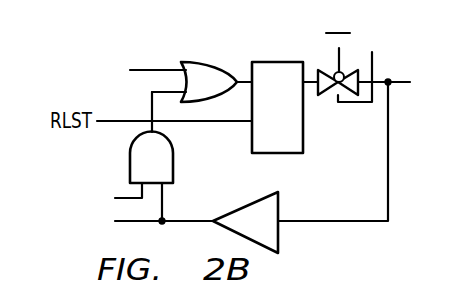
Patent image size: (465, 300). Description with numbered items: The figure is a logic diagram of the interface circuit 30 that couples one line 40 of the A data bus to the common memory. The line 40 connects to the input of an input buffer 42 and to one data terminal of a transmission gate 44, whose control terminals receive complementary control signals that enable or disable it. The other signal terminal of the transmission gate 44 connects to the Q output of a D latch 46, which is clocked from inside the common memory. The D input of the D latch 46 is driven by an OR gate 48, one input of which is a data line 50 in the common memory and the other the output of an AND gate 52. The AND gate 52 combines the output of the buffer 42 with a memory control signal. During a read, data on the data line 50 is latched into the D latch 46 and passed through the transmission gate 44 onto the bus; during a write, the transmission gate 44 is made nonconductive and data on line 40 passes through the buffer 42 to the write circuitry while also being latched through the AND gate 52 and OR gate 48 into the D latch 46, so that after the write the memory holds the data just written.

The interface circuit 30 is at (91, 71).
The line 40 is at (404, 80).
The input buffer 42 is at (280, 202).
The transmission gate 44 is at (328, 96).
The D latch 46 is at (276, 62).
The OR gate 48 is at (197, 62).
The data line 50 is at (140, 68).
The AND gate 52 is at (176, 152).